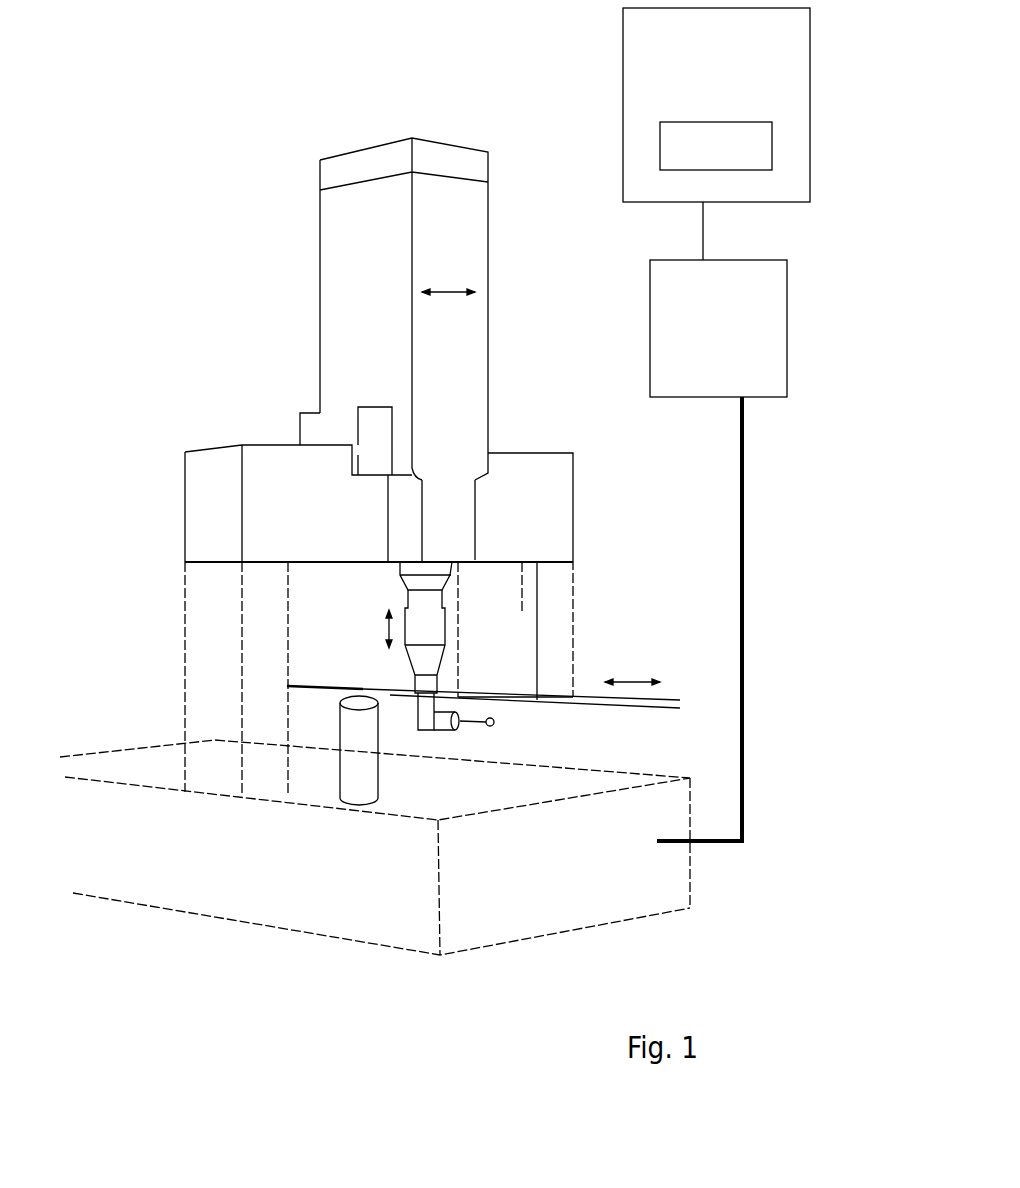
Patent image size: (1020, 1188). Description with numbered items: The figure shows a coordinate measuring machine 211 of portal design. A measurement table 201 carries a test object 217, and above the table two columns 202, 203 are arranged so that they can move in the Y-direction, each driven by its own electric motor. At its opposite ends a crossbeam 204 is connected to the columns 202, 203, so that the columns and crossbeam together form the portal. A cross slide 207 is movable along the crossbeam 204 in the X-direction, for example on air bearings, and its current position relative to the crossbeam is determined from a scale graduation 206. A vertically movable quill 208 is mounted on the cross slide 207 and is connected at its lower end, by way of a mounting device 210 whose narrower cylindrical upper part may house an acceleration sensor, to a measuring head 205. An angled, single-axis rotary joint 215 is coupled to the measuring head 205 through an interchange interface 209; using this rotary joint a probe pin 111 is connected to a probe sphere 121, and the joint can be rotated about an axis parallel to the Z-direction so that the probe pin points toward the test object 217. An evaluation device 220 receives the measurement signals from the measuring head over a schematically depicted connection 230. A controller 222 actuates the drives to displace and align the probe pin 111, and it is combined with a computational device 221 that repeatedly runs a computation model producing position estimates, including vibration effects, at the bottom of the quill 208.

The probe pin 111 is at (462, 718).
The probe sphere 121 is at (494, 724).
The measurement table 201 is at (123, 750).
The column 202 is at (575, 640).
The column 203 is at (185, 648).
The crossbeam 204 is at (218, 445).
The measuring head 205 is at (405, 647).
The scale graduation 206 is at (511, 605).
The cross slide 207 is at (320, 265).
The quill 208 is at (452, 568).
The interchange interface 209 is at (440, 686).
The mounting device 210 is at (408, 605).
The coordinate measuring machine 211 is at (168, 932).
The rotary joint 215 is at (425, 731).
The test object 217 is at (350, 767).
The evaluation device 220 is at (680, 385).
The computational device 221 is at (678, 148).
The controller 222 is at (623, 97).
The connection 230 is at (738, 520).